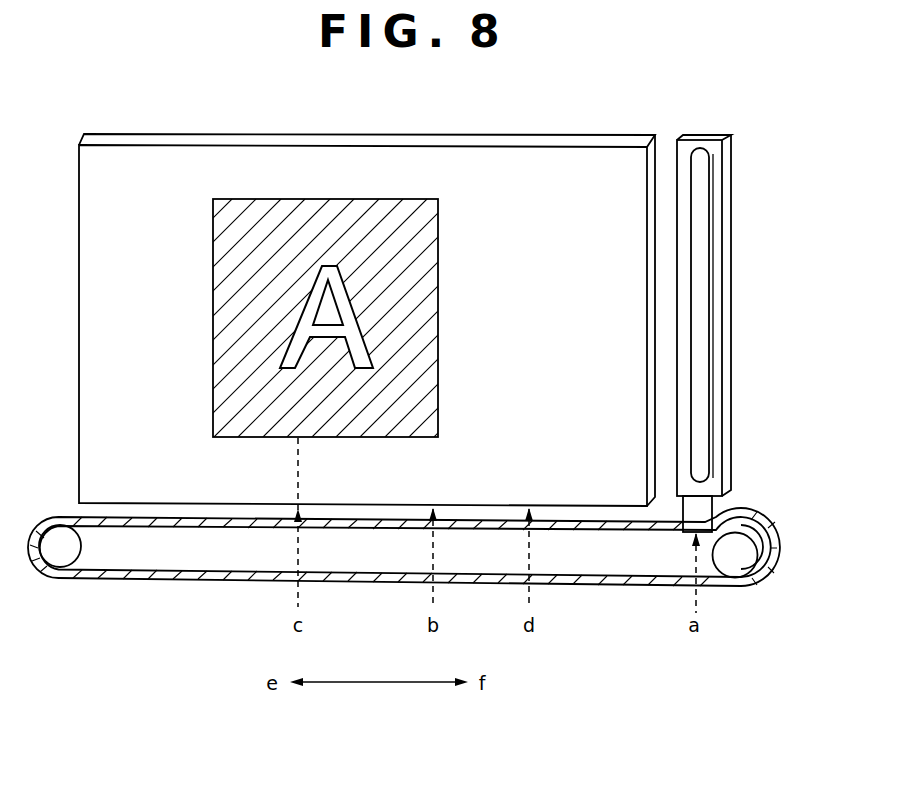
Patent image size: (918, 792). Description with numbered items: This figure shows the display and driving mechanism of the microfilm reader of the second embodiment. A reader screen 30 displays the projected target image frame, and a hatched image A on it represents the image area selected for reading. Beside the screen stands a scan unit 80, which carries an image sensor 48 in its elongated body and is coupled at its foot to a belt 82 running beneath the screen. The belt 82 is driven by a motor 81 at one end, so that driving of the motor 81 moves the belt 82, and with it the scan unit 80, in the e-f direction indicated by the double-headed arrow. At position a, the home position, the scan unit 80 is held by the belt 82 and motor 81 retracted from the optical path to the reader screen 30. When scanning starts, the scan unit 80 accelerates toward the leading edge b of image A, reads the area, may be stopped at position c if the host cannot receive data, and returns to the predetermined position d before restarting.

The reader screen 30 is at (589, 162).
The scan unit 80 is at (705, 137).
The image sensor 48 is at (697, 290).
The motor 81 is at (757, 517).
The belt 82 is at (100, 578).